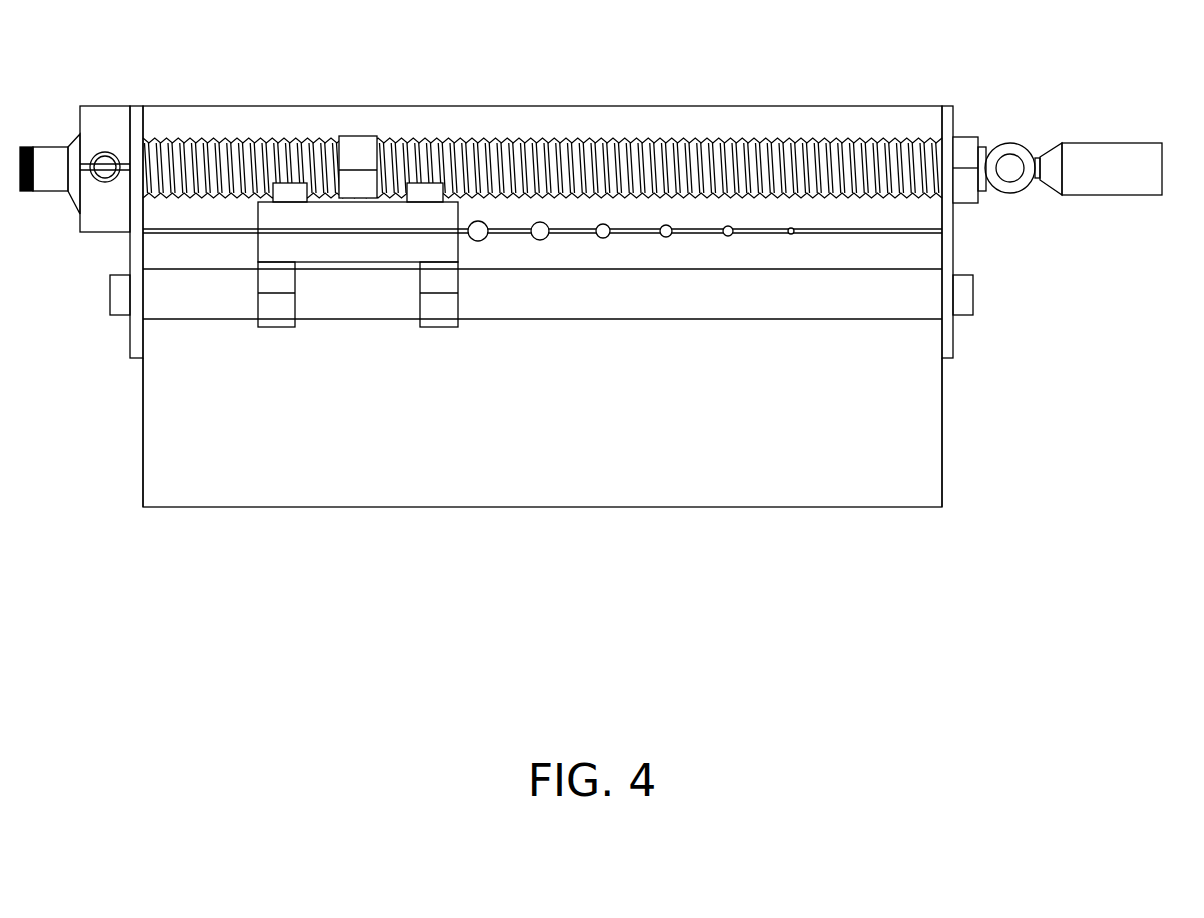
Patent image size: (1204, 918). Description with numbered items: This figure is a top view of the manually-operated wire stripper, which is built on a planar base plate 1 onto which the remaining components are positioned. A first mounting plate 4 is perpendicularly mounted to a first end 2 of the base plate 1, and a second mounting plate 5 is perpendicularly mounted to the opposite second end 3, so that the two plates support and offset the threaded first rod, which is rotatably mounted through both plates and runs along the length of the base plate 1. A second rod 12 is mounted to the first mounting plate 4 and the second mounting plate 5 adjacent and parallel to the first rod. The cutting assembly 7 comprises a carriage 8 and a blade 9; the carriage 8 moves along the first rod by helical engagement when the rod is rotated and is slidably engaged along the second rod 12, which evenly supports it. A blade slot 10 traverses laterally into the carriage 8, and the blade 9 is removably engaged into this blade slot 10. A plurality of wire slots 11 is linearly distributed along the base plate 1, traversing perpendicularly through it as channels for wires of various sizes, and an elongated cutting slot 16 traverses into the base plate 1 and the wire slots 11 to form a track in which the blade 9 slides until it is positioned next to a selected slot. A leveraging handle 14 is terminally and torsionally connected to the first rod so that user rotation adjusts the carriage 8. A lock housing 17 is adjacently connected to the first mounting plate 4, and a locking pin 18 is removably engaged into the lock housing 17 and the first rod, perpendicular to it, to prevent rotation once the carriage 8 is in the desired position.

The base plate 1 is at (584, 517).
The first end 2 is at (143, 381).
The second end 3 is at (942, 380).
The first mounting plate 4 is at (133, 112).
The second mounting plate 5 is at (949, 112).
The cutting assembly 7 is at (460, 259).
The carriage 8 is at (355, 255).
The blade 9 is at (484, 239).
The blade slot 10 is at (256, 232).
The plurality of wire slots 11 is at (603, 238).
The second rod 12 is at (636, 312).
The leveraging handle 14 is at (1137, 152).
The elongated cutting slot 16 is at (863, 232).
The lock housing 17 is at (85, 112).
The locking pin 18 is at (97, 185).